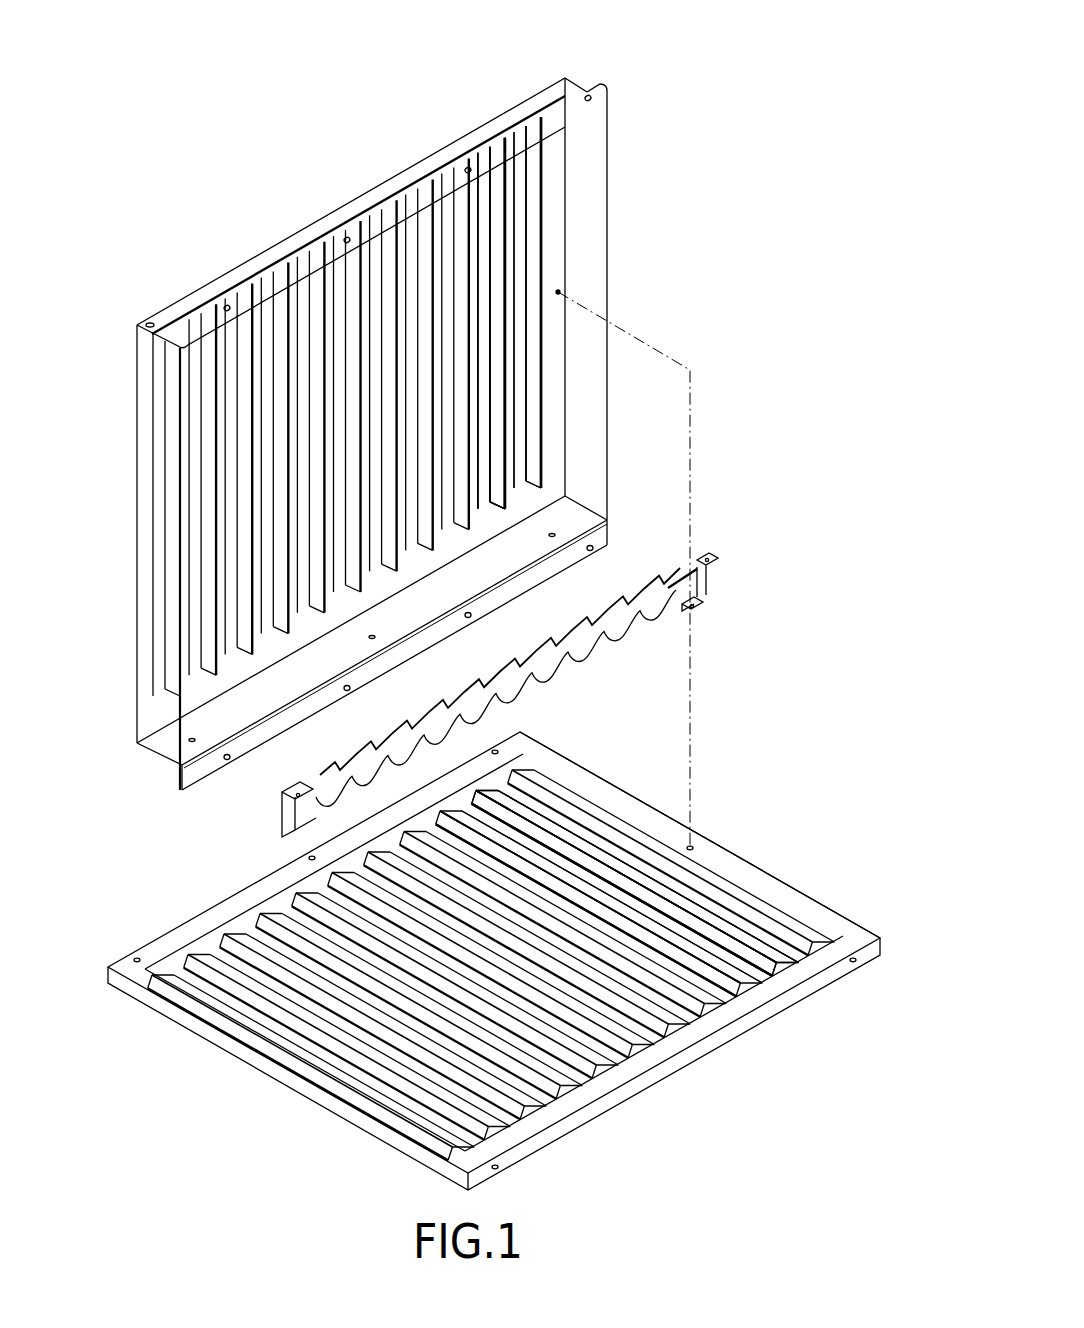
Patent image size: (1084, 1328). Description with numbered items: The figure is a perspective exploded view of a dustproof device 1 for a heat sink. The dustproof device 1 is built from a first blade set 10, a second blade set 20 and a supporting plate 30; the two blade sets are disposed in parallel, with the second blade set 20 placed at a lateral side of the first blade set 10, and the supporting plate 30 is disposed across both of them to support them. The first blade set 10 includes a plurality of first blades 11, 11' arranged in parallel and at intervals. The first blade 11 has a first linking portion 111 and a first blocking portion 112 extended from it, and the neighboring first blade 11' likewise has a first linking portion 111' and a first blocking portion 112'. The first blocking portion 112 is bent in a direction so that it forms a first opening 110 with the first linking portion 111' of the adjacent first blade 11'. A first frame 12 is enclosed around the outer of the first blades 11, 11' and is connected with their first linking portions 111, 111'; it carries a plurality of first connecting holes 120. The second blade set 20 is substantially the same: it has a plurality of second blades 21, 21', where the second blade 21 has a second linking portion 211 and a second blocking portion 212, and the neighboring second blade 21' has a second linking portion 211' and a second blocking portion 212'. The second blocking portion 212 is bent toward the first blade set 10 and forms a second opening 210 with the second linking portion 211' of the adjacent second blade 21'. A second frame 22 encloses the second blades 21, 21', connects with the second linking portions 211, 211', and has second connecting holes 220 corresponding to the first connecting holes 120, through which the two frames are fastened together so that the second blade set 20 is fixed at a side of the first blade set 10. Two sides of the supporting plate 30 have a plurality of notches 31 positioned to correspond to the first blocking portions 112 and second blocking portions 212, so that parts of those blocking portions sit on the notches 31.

The dustproof device 1 is at (306, 37).
The first blade set 10 is at (353, 177).
The first blade 11 is at (618, 302).
The first blade 11' is at (464, 262).
The first frame 12 is at (592, 165).
The first opening 110 is at (495, 233).
The first linking portion 111 is at (596, 302).
The first blocking portion 112 is at (591, 307).
The first linking portion 111' is at (497, 288).
The first blocking portion 112' is at (450, 288).
The first connecting hole 120 is at (560, 292).
The second blade set 20 is at (190, 900).
The second blade 21 is at (683, 883).
The second blade 21' is at (656, 956).
The second frame 22 is at (510, 752).
The second opening 210 is at (628, 890).
The second linking portion 211 is at (680, 883).
The second blocking portion 212 is at (660, 877).
The second linking portion 211' is at (657, 928).
The second blocking portion 212' is at (632, 944).
The second connecting hole 220 is at (691, 848).
The supporting plate 30 is at (728, 572).
The notch 31 is at (637, 598).